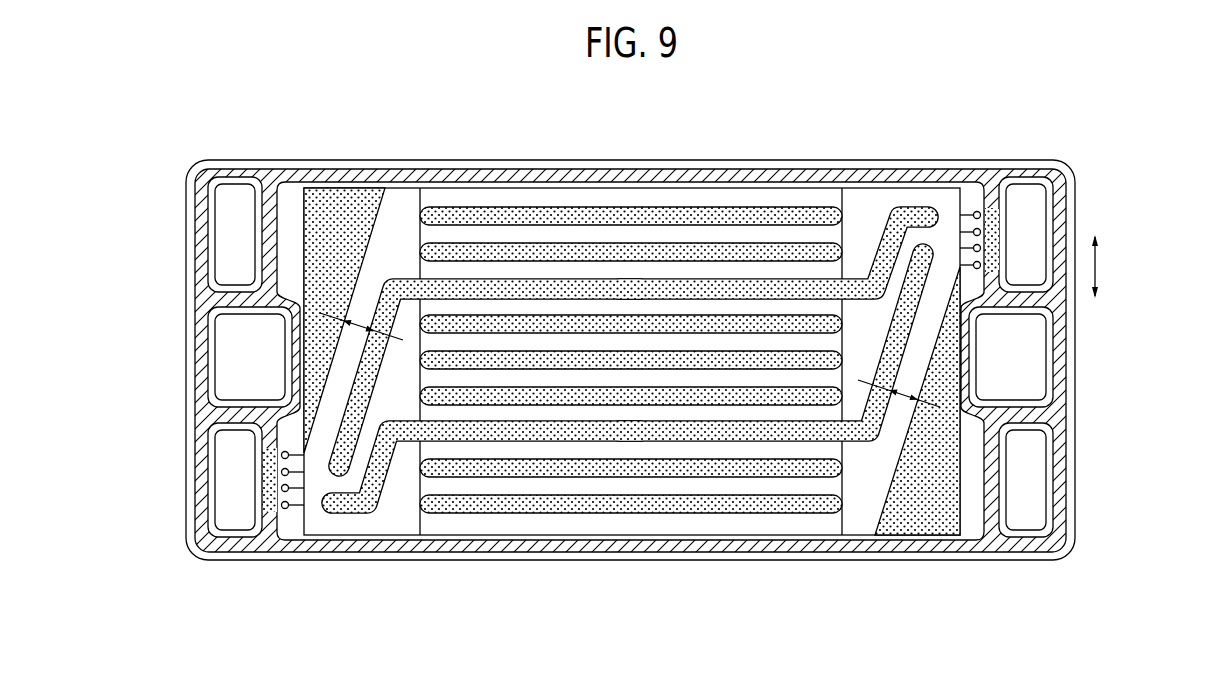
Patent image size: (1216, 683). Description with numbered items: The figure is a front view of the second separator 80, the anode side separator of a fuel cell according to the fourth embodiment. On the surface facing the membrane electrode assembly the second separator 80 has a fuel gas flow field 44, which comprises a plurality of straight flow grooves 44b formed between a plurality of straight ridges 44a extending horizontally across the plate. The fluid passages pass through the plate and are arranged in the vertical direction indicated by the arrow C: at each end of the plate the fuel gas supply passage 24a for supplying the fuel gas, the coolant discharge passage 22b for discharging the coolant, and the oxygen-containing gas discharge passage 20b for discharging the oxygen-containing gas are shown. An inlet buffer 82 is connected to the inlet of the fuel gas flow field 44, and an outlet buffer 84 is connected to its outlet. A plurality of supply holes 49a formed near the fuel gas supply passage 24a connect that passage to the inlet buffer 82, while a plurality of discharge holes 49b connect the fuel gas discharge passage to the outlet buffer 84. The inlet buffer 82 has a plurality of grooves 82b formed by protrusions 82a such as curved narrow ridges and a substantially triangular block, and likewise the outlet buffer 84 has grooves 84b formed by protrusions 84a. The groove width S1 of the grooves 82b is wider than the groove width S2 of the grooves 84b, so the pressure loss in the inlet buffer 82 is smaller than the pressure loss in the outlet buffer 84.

The second separator 80 is at (928, 113).
The outlet buffer 84 is at (392, 222).
The protrusions 84a is at (304, 434).
The grooves 84b is at (335, 400).
The inlet buffer 82 is at (867, 500).
The protrusions 82a is at (915, 318).
The grooves 82b is at (908, 247).
The fuel gas flow field 44 is at (631, 368).
The straight ridges 44a is at (477, 436).
The straight flow grooves 44b is at (577, 448).
The supply holes 49a is at (980, 211).
The discharge holes 49b is at (282, 513).
The fuel gas supply passage 24a is at (630, 234).
The coolant discharge passage 22b is at (168, 378).
The oxygen-containing gas discharge passage 20b is at (630, 480).
The groove width S1 is at (899, 400).
The groove width S2 is at (369, 340).
The arrow C is at (1110, 266).